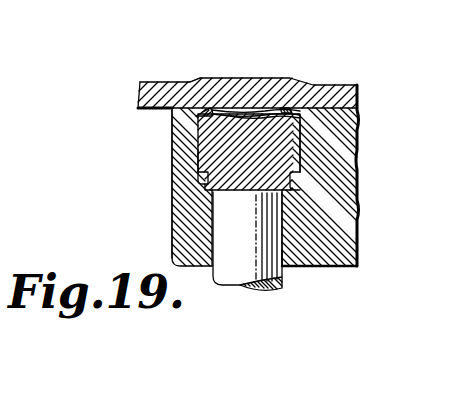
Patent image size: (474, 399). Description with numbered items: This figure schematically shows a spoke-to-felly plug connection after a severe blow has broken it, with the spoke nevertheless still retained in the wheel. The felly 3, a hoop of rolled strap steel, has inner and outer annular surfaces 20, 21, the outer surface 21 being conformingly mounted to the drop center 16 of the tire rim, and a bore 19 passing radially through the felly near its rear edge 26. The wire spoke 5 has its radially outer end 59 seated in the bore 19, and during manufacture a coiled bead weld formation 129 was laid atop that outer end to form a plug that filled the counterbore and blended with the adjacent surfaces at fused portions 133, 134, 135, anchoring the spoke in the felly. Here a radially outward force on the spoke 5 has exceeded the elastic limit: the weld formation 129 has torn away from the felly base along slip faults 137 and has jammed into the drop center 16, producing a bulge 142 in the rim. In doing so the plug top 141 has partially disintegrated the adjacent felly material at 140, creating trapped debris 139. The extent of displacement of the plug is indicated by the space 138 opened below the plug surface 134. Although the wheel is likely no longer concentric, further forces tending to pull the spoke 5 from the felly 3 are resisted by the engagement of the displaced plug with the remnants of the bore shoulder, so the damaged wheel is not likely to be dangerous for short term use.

The felly 3 is at (359, 240).
The wire spoke 5 is at (218, 287).
The drop center 16 is at (191, 85).
The bore 19 is at (212, 229).
The inner annular surface 20 is at (347, 267).
The outer annular surface 21 is at (163, 102).
The rear edge 26 is at (172, 227).
The outer end 59 is at (289, 268).
The bead weld formation 129 is at (223, 155).
The fused portion 133 is at (302, 115).
The fused portion 134 is at (302, 177).
The fused portion 135 is at (270, 168).
The slip fault 137 is at (302, 145).
The space below plug surface 138 is at (303, 182).
The trapped debris 139 is at (200, 113).
The disintegrated felly material 140 is at (358, 110).
The plug top 141 is at (233, 111).
The bulge 142 is at (257, 97).